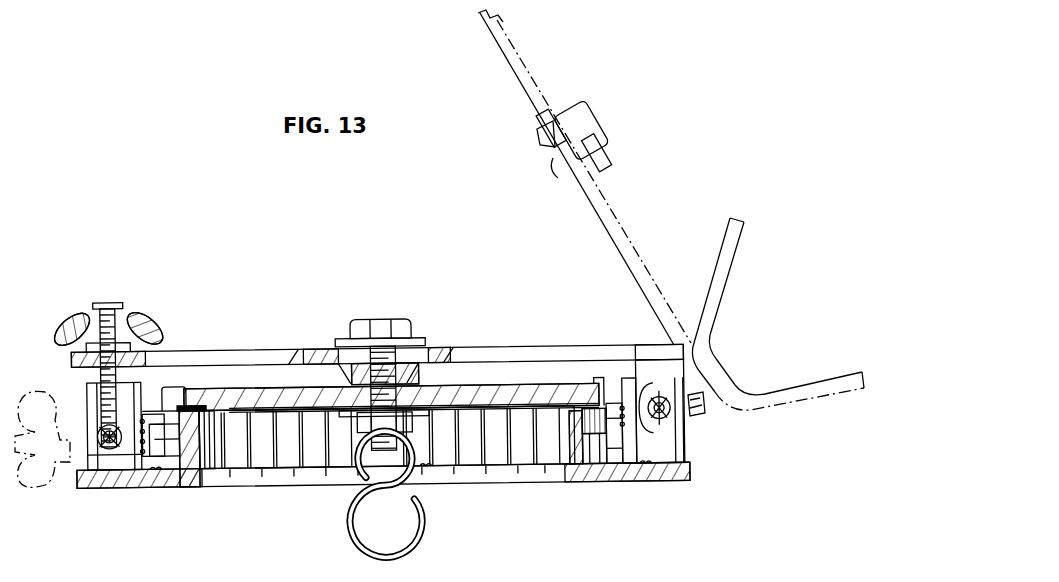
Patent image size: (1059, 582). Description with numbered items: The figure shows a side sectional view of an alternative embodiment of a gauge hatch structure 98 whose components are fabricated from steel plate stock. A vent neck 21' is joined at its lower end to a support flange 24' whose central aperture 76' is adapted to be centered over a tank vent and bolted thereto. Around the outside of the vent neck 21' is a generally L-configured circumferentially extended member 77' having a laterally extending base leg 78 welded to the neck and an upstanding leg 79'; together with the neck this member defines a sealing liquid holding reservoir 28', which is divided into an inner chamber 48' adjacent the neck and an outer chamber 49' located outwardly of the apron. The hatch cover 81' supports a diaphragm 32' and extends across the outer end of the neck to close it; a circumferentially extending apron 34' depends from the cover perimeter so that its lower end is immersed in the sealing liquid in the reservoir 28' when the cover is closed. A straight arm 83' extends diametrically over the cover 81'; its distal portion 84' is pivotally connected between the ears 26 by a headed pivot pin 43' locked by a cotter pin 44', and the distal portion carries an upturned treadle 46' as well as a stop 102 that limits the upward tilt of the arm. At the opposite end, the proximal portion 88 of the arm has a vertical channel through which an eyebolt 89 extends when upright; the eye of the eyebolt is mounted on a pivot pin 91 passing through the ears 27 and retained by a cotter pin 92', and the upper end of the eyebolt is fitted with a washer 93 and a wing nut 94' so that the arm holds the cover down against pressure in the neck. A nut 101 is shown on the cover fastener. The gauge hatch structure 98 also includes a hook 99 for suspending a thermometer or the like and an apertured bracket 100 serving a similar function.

The gauge hatch structure 98 is at (505, 207).
The wing nut 94' is at (85, 362).
The proximal portion 88 is at (62, 333).
The eyebolt 89 is at (118, 320).
The washer 93 is at (148, 346).
The arm 83' is at (377, 337).
The upstanding leg 79' is at (178, 371).
The bracket 27 is at (88, 395).
The apron 34' is at (188, 390).
The cotter pin 92' is at (86, 429).
The pivot pin 91 is at (90, 453).
The support flange 24' is at (368, 495).
The circumferentially extended member 77' is at (152, 467).
The base leg 78 is at (190, 462).
The vent neck 21' is at (213, 466).
The apertured bracket 100 is at (222, 465).
The nut 101 is at (413, 418).
The hook 99 is at (428, 515).
The hatch cover 81' is at (394, 360).
The diaphragm 32' is at (414, 358).
The distal portion 84' is at (647, 386).
The treadle 46' is at (735, 280).
The cotter pin 44' is at (723, 363).
The pivot pin 43' is at (789, 390).
The ears 26 is at (679, 428).
The stop 102 is at (712, 412).
The inner chamber 48' is at (542, 463).
The central aperture 76' is at (572, 462).
The sealing liquid holding reservoir 28' is at (595, 474).
The outer chamber 49' is at (639, 459).